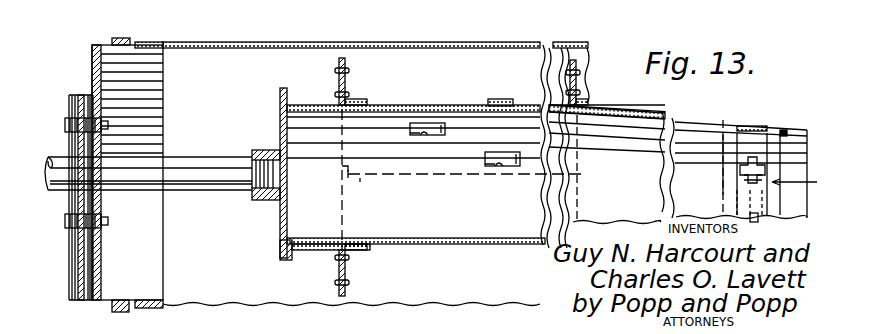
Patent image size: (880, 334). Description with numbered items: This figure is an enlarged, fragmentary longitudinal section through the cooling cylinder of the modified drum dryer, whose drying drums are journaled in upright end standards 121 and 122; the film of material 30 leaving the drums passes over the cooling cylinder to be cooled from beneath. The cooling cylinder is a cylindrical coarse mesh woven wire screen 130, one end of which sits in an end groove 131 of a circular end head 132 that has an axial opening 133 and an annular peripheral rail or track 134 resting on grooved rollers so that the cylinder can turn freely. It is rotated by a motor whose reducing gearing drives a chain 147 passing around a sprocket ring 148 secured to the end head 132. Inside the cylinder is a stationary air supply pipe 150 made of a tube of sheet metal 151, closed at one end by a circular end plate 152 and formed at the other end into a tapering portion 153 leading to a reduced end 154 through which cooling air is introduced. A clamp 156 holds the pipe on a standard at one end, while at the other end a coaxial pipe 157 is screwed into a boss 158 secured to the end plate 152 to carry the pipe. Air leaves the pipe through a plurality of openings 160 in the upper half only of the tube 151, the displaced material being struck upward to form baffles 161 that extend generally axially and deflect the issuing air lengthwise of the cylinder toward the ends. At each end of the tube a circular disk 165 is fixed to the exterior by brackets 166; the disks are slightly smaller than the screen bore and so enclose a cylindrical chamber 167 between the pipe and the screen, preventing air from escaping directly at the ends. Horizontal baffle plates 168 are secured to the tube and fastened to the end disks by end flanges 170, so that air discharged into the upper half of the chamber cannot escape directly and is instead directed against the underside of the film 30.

The film of material 30 is at (425, 44).
The end standard 121 is at (237, 6).
The end standard 122 is at (707, 4).
The coarse mesh woven wire screen 130 is at (247, 50).
The end groove 131 is at (165, 47).
The circular end head 132 is at (91, 49).
The axial opening 133 is at (98, 146).
The annular peripheral rail or track 134 is at (131, 24).
The chain 147 is at (76, 95).
The sprocket ring 148 is at (72, 113).
The stationary pipe 150 is at (322, 255).
The tube of sheet metal 151 is at (324, 105).
The circular end plate 152 is at (281, 136).
The tapering portion 153 is at (673, 100).
The reduced end 154 is at (806, 113).
The clamp 156 is at (755, 107).
The coaxial pipe 157 is at (190, 184).
The boss 158 is at (264, 194).
The openings 160 is at (425, 135).
The baffles 161 is at (520, 95).
The circular disk 165 is at (348, 61).
The brackets 166 is at (348, 84).
The cylindrical chamber 167 is at (464, 72).
The horizontal baffle plates 168 is at (363, 188).
The end flanges 170 is at (340, 167).